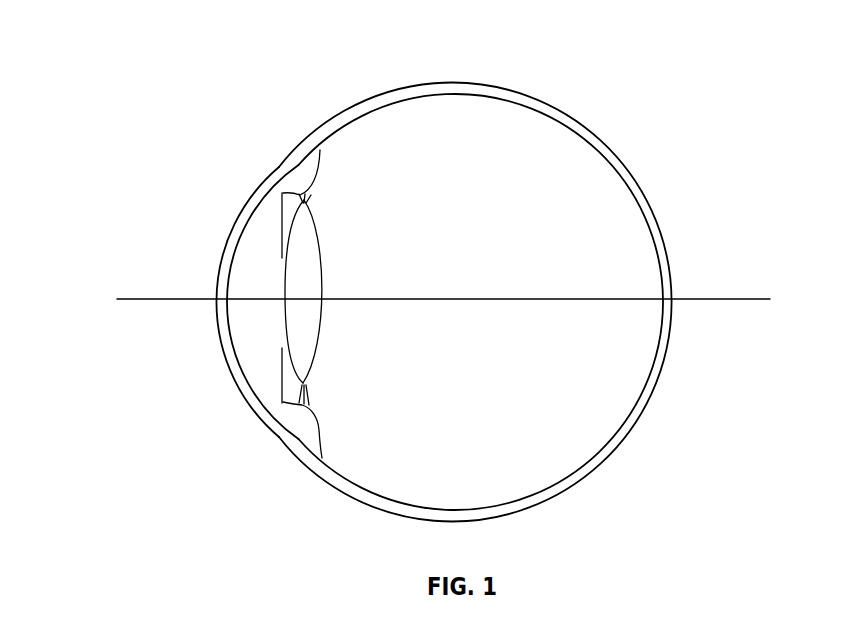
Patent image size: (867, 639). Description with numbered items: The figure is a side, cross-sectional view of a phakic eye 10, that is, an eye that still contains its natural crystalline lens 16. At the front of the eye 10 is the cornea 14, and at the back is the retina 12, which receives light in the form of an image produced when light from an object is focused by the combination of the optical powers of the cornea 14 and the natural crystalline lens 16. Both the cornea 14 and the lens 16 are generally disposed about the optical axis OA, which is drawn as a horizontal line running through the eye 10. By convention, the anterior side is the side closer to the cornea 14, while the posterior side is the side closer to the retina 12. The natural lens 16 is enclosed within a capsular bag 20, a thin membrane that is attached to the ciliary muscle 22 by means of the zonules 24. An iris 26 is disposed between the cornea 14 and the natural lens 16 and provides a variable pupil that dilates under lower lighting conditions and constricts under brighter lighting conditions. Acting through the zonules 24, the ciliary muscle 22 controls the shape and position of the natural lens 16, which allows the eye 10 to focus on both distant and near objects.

The eye 10 is at (168, 50).
The retina 12 is at (652, 380).
The cornea 14 is at (228, 363).
The natural crystalline lens 16 is at (323, 248).
The capsular bag 20 is at (322, 330).
The ciliary muscle 22 is at (320, 440).
The zonules 24 is at (308, 392).
The iris 26 is at (283, 372).
The optical axis OA is at (178, 299).